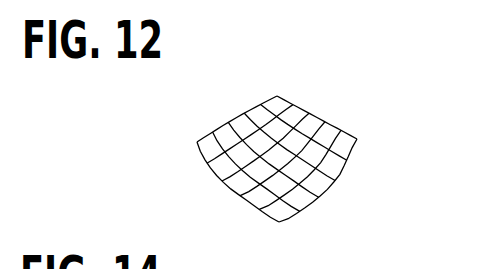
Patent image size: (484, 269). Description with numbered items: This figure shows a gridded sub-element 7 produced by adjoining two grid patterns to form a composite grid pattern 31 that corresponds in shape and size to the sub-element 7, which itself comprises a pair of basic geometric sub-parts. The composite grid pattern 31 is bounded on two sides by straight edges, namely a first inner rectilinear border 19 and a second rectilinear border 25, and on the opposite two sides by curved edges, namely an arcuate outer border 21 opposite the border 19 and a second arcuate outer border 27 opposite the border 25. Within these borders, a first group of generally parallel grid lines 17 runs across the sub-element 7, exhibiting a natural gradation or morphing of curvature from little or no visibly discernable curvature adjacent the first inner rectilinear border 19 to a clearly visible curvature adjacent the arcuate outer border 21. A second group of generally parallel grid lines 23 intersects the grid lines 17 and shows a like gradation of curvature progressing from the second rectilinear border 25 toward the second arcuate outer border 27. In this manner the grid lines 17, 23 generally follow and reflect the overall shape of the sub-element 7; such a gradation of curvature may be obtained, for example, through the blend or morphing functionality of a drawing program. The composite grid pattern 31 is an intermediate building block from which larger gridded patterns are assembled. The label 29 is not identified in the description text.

The sub-element 7 is at (360, 117).
The first group of generally parallel grid lines 17 is at (210, 185).
The first inner rectilinear border 19 is at (236, 120).
The arcuate outer border 21 is at (320, 195).
The second group of generally parallel grid lines 23 is at (329, 183).
The second rectilinear border 25 is at (310, 112).
The second arcuate outer border 27 is at (228, 188).
The strand 29 is at (190, 143).
The composite grid pattern 31 is at (287, 138).